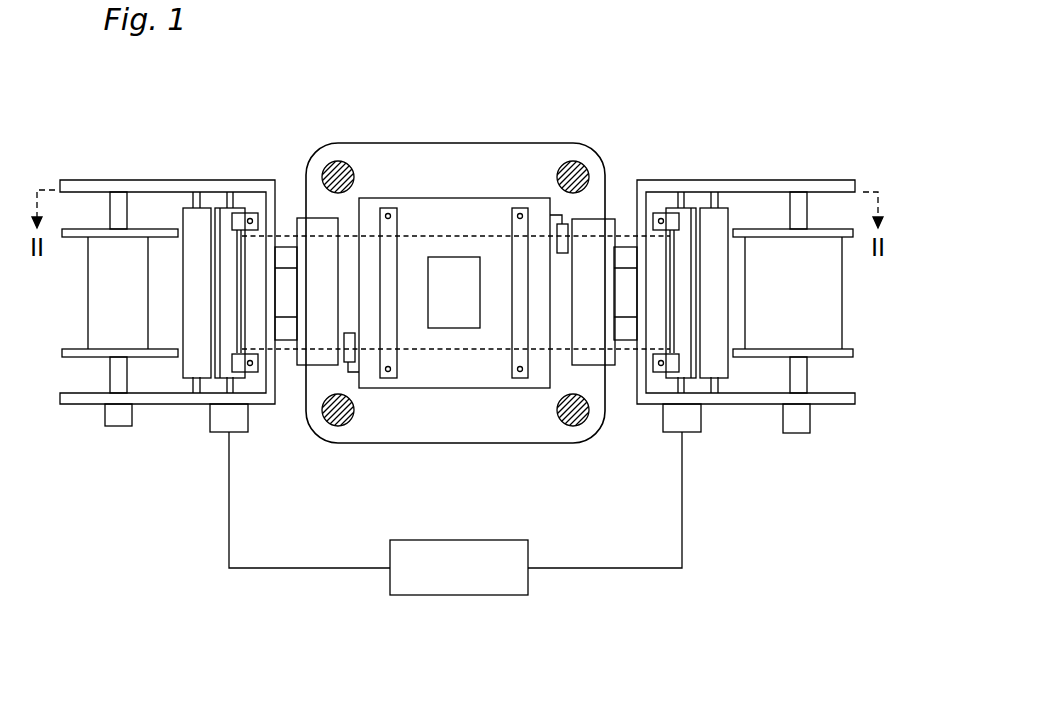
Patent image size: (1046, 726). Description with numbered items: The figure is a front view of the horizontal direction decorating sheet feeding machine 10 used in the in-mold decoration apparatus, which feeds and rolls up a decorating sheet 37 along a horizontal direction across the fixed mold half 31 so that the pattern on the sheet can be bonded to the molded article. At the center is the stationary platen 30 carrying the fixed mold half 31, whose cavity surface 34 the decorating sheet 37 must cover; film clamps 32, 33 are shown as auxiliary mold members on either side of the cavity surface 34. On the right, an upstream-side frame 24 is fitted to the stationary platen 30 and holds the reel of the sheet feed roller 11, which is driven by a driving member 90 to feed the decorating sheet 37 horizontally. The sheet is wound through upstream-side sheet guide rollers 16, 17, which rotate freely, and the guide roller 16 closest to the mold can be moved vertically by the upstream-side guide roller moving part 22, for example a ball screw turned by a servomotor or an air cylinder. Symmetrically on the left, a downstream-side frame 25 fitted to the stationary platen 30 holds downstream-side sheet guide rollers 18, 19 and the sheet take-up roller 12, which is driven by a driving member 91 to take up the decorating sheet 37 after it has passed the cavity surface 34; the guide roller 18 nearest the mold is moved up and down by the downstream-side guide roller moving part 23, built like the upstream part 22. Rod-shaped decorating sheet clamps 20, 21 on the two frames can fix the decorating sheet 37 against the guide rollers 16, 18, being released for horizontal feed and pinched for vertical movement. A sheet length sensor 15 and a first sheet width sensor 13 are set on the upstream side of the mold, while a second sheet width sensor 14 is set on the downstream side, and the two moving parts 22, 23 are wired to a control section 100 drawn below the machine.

The horizontal direction decorating sheet feeding machine 10 is at (680, 92).
The sheet feed roller 11 is at (829, 228).
The sheet take-up roller 12 is at (95, 228).
The first sheet width sensor 13 is at (572, 353).
The second sheet width sensor 14 is at (345, 364).
The sheet length sensor 15 is at (565, 225).
The upstream-side sheet guide roller 16 is at (697, 210).
The upstream-side sheet guide roller 17 is at (727, 208).
The downstream-side sheet guide roller 18 is at (247, 212).
The downstream-side sheet guide roller 19 is at (183, 207).
The decorating sheet clamp 20 is at (692, 350).
The decorating sheet clamp 21 is at (220, 357).
The upstream-side guide roller moving part 22 is at (688, 434).
The downstream-side guide roller moving part 23 is at (222, 434).
The upstream-side frame 24 is at (843, 406).
The downstream-side frame 25 is at (78, 405).
The stationary platen 30 is at (524, 443).
The fixed mold half 31 is at (400, 388).
The film clamp 32 is at (521, 212).
The film clamp 33 is at (388, 212).
The cavity surface 34 is at (452, 257).
The decorating sheet 37 is at (455, 352).
The driving member 90 is at (797, 434).
The driving member 91 is at (113, 426).
The control section 100 is at (515, 583).